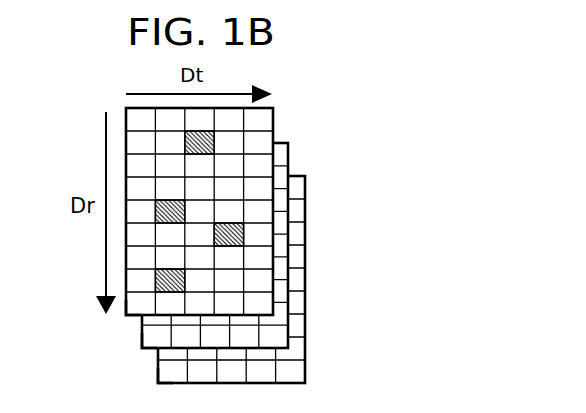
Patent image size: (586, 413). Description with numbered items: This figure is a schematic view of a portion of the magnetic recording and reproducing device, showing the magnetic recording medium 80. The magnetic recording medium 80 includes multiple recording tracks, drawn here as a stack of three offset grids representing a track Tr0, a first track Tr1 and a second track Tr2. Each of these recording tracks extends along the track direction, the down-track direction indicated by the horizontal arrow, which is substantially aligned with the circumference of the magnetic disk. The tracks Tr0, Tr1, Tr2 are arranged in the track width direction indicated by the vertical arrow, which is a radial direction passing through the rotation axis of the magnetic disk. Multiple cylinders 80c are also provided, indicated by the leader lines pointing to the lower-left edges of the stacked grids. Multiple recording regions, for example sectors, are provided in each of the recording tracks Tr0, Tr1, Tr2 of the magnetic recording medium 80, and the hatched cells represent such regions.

The magnetic recording medium 80 is at (220, 222).
The cylinders 80c is at (157, 382).
The track Tr0 is at (274, 120).
The first track Tr1 is at (288, 147).
The second track Tr2 is at (305, 180).